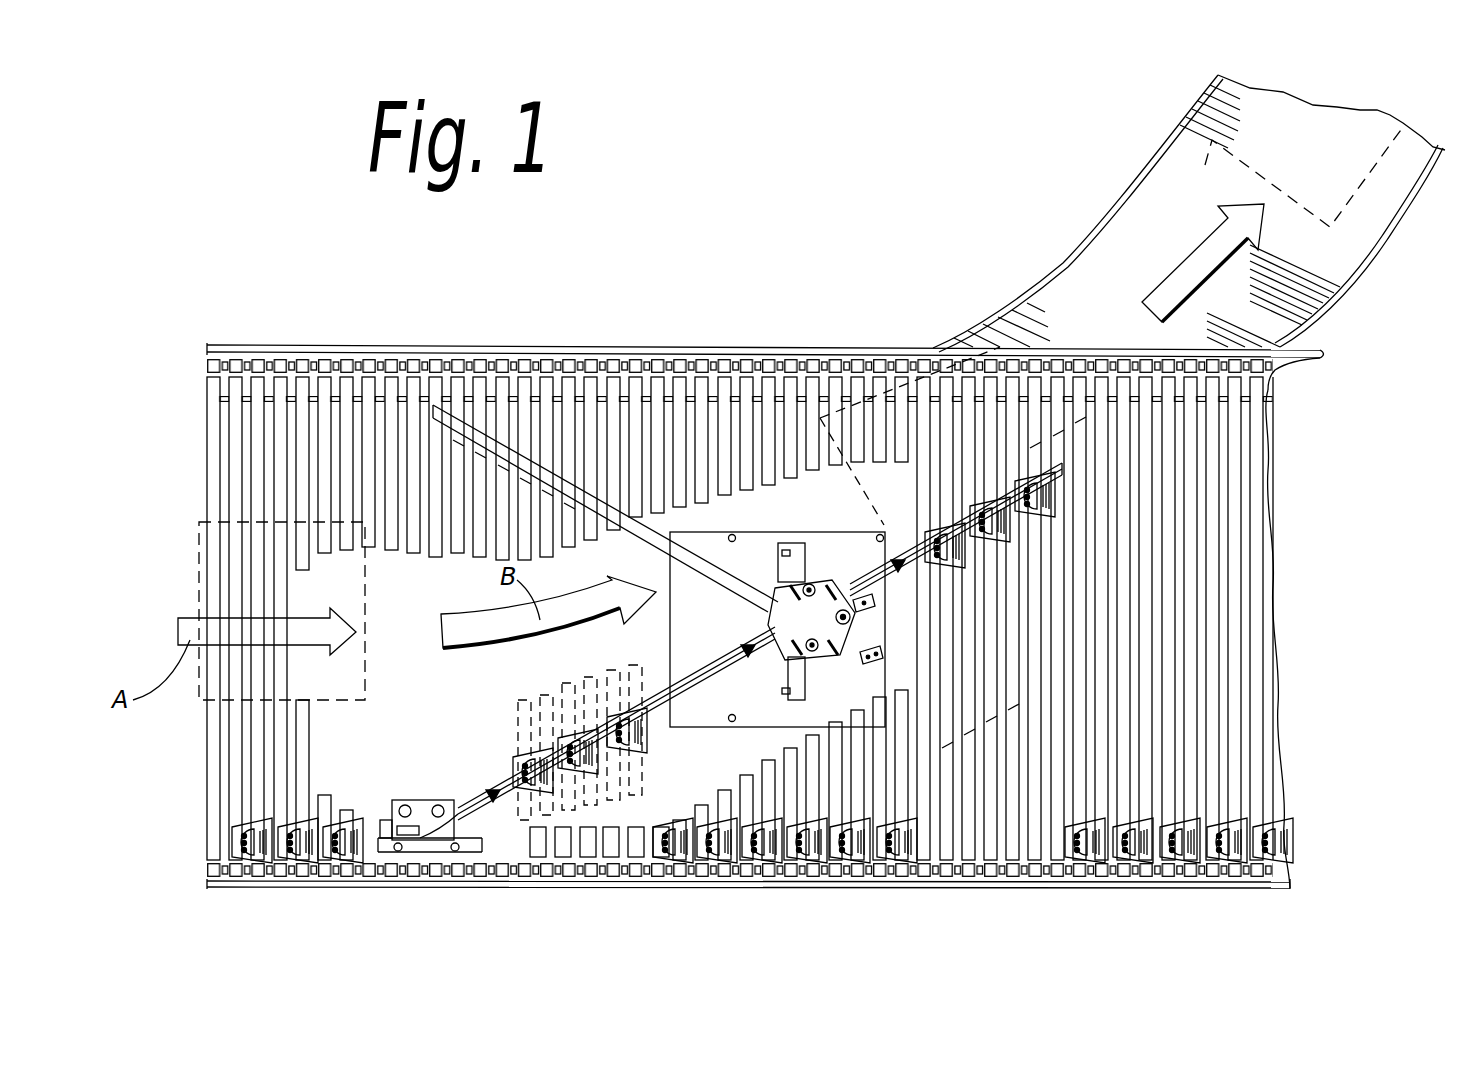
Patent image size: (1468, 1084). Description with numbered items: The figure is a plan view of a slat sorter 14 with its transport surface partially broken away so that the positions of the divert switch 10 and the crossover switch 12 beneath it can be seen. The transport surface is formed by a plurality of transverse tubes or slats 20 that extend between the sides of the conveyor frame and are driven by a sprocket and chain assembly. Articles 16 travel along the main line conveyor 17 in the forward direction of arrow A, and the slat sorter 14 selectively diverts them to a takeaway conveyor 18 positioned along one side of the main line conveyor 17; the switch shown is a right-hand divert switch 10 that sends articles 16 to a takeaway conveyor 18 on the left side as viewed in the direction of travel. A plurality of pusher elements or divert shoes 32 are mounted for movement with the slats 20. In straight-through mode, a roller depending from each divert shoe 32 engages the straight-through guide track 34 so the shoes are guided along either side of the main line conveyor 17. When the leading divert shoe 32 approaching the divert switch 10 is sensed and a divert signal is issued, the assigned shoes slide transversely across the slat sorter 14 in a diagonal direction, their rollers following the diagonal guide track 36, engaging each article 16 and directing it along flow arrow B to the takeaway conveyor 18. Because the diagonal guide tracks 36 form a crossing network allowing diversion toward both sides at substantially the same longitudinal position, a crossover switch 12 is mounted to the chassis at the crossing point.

The divert switch 10 is at (424, 905).
The crossover switch 12 is at (849, 546).
The slat sorter 14 is at (712, 323).
The articles 16 is at (255, 520).
The main line conveyor 17 is at (448, 423).
The takeaway conveyor 18 is at (1118, 218).
The slats 20 is at (992, 860).
The divert shoes 32 is at (718, 853).
The straight-through guide track 34 is at (942, 856).
The diagonal guide track 36 is at (770, 598).